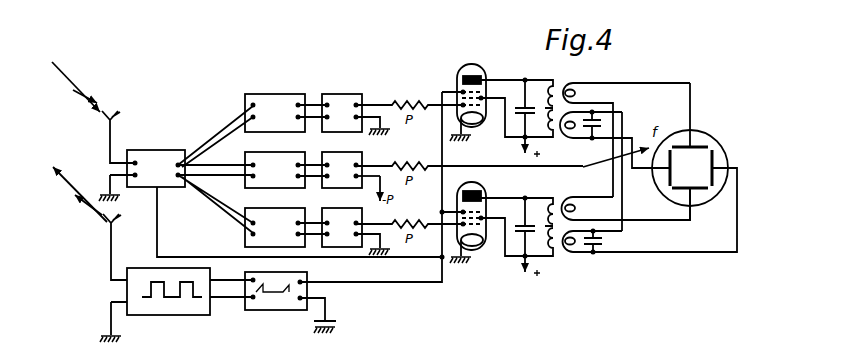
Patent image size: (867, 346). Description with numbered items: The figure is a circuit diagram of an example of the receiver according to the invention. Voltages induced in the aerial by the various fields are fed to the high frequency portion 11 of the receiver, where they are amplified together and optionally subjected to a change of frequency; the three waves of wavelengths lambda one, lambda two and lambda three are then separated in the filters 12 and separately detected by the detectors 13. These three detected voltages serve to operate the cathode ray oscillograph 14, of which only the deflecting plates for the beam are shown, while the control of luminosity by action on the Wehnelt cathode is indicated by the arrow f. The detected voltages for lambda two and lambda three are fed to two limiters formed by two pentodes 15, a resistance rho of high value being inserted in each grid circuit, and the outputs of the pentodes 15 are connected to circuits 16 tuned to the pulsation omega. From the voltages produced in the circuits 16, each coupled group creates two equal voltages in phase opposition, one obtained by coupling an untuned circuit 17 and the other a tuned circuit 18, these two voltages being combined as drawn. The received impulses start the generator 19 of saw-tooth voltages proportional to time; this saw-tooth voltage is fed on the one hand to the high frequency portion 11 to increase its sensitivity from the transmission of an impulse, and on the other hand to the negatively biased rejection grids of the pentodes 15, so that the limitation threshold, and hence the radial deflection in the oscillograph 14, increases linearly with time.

The high frequency portion 11 is at (156, 168).
The filters 12 is at (275, 170).
The detectors 13 is at (342, 170).
The cathode ray oscillograph 14 is at (684, 152).
The pentodes 15 is at (467, 155).
The tuned circuits 16 is at (517, 177).
The untuned circuit 17 is at (648, 167).
The tuned circuit 18 is at (592, 193).
The generator of saw-tooth voltages 19 is at (276, 303).